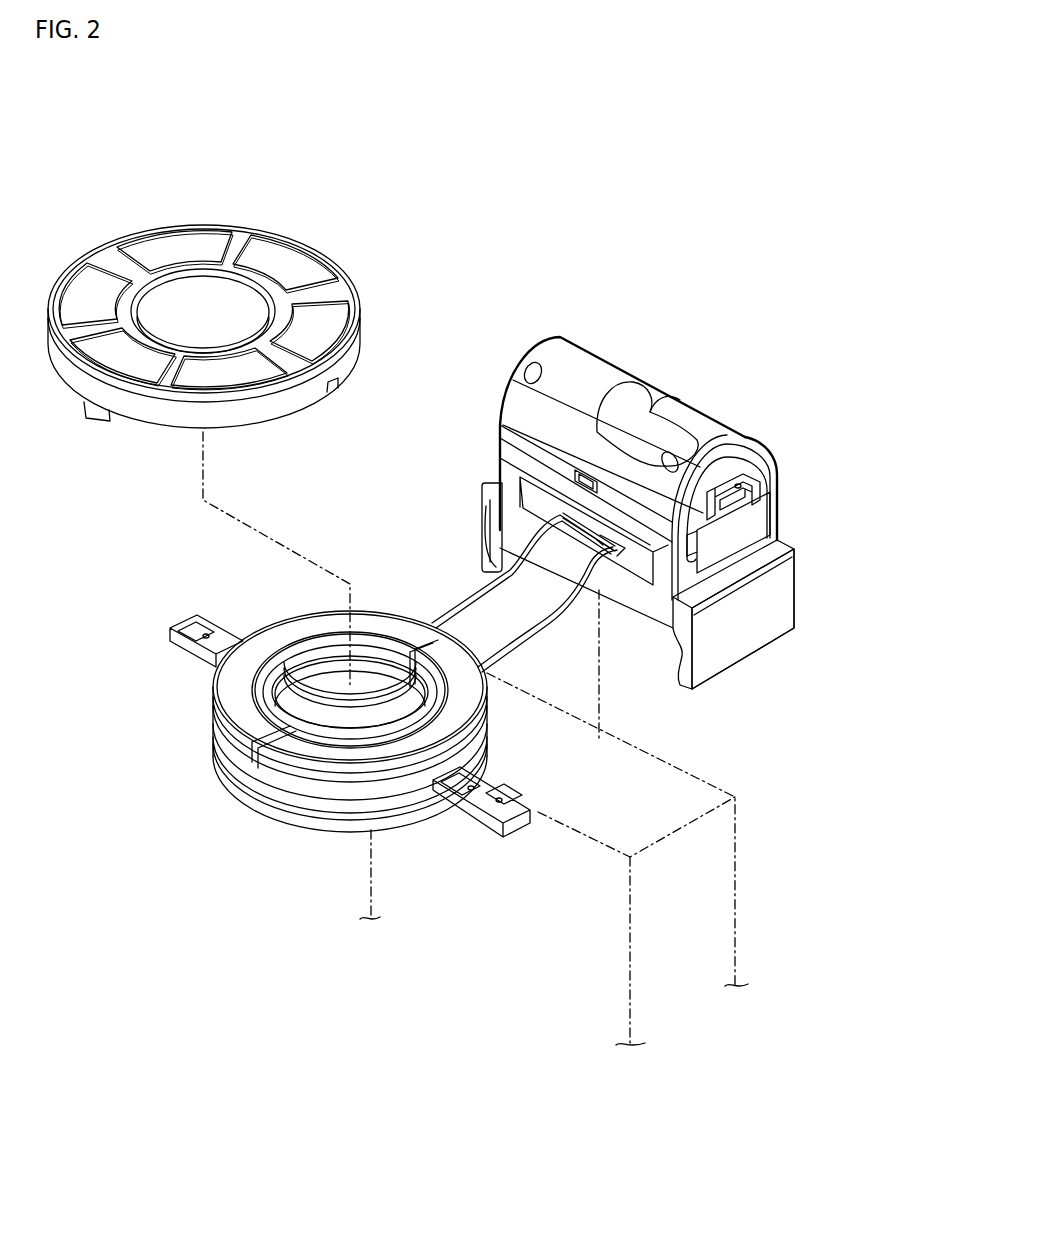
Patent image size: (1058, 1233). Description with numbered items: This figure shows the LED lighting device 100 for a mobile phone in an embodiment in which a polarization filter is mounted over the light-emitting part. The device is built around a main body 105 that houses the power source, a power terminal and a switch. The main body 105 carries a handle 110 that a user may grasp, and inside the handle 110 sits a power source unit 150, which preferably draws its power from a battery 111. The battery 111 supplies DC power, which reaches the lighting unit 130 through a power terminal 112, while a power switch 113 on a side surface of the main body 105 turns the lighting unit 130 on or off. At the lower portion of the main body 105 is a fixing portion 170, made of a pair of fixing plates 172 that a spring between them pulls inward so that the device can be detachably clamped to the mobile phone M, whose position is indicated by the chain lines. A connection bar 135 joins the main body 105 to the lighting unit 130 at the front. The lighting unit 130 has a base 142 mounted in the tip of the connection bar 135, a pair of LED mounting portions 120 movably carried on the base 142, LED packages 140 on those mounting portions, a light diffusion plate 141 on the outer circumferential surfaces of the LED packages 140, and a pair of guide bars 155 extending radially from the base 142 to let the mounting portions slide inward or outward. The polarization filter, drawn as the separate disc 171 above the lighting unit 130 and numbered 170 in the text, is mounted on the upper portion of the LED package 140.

The LED lighting device 100 is at (213, 120).
The main body 105 is at (704, 361).
The handle 110 is at (577, 450).
The battery 111 is at (760, 518).
The power terminal 112 is at (577, 476).
The power switch 113 is at (503, 402).
The LED mounting portion 120 is at (270, 622).
The lighting unit 130 is at (343, 773).
The connection bar 135 is at (470, 606).
The LED package 140 is at (233, 693).
The light diffusion plate 141 is at (490, 710).
The base 142 is at (312, 832).
The power source unit 150 is at (783, 481).
The guide bar 155 is at (515, 834).
The fixing portion 170 is at (795, 600).
The cover 171 is at (297, 243).
The fixing plate 172 is at (483, 550).
The mobile phone M is at (729, 918).